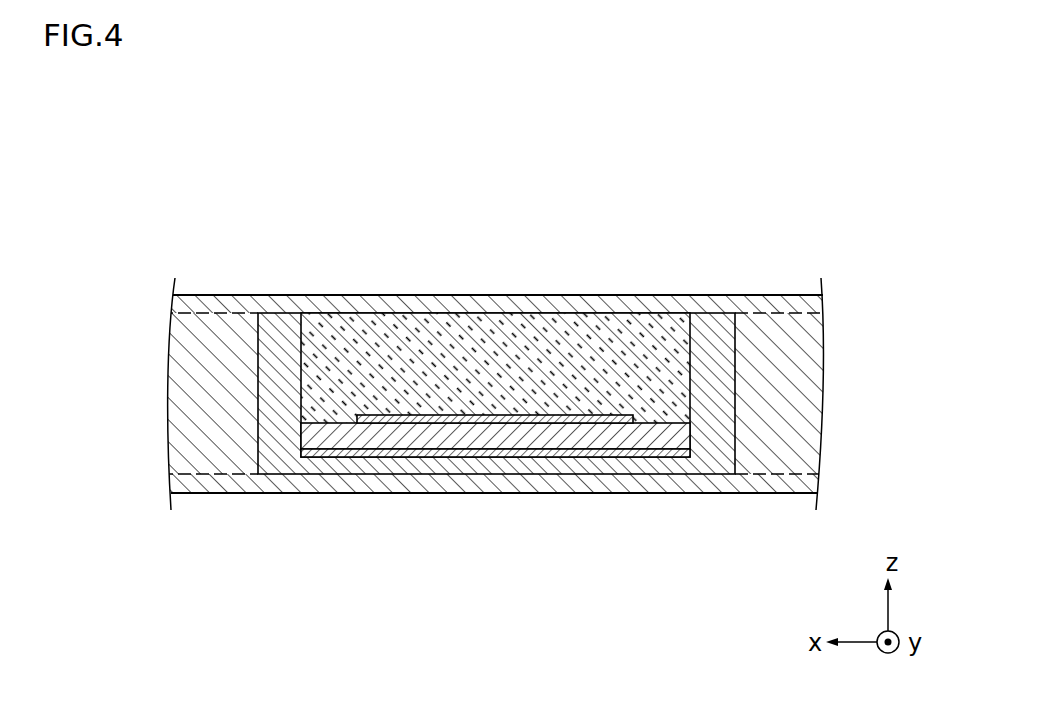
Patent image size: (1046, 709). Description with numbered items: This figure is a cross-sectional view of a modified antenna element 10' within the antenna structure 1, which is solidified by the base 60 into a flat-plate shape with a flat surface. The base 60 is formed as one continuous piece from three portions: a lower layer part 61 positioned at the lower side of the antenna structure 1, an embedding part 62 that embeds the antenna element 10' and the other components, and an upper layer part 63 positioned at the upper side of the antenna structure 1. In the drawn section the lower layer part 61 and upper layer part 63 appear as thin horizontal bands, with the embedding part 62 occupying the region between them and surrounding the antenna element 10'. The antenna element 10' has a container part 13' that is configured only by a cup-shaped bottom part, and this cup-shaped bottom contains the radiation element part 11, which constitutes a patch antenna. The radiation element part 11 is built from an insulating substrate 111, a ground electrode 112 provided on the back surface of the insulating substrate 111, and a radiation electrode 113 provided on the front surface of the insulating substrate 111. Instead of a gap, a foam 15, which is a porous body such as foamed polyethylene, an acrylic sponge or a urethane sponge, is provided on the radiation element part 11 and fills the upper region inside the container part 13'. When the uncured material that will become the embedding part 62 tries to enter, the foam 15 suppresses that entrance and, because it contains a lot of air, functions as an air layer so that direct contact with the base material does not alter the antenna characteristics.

The antenna structure 1 is at (560, 381).
The antenna element 10' is at (496, 419).
The radiation element part 11 is at (489, 519).
The insulating substrate 111 is at (322, 432).
The ground electrode 112 is at (379, 455).
The radiation electrode 113 is at (440, 421).
The container part 13' is at (496, 353).
The foam 15 is at (518, 338).
The base 60 is at (560, 393).
The lower layer part 61 is at (530, 487).
The embedding part 62 is at (800, 398).
The upper layer part 63 is at (800, 303).